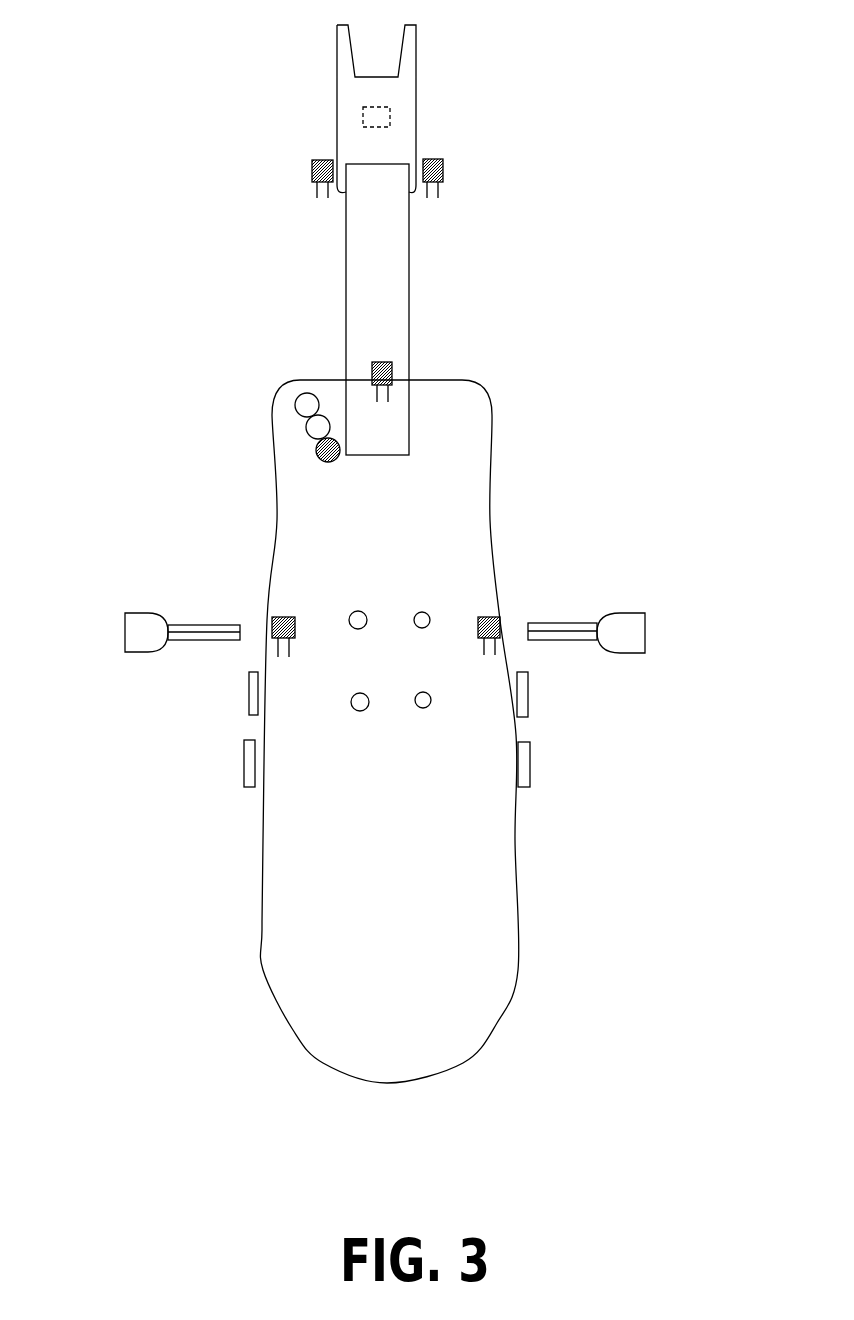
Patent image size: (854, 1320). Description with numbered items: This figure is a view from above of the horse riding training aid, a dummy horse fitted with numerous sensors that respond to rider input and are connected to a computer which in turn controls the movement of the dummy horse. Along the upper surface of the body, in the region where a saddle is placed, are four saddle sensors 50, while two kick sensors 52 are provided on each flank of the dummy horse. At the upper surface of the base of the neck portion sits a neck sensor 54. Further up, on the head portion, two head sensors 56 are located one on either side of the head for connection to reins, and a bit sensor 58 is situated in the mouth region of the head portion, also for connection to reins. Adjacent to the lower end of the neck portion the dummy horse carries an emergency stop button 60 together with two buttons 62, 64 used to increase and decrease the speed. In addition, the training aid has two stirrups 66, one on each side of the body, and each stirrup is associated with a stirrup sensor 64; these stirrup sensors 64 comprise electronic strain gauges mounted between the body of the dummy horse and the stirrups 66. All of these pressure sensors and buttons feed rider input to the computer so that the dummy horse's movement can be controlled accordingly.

The saddle sensor 50 is at (348, 617).
The kick sensor 52 is at (250, 673).
The neck sensor 54 is at (423, 380).
The head sensor 56 is at (313, 182).
The bit sensor 58 is at (392, 115).
The emergency stop button 60 is at (327, 457).
The speed button 62 is at (307, 433).
The stirrup sensor 64 is at (315, 380).
The stirrup 66 is at (122, 638).